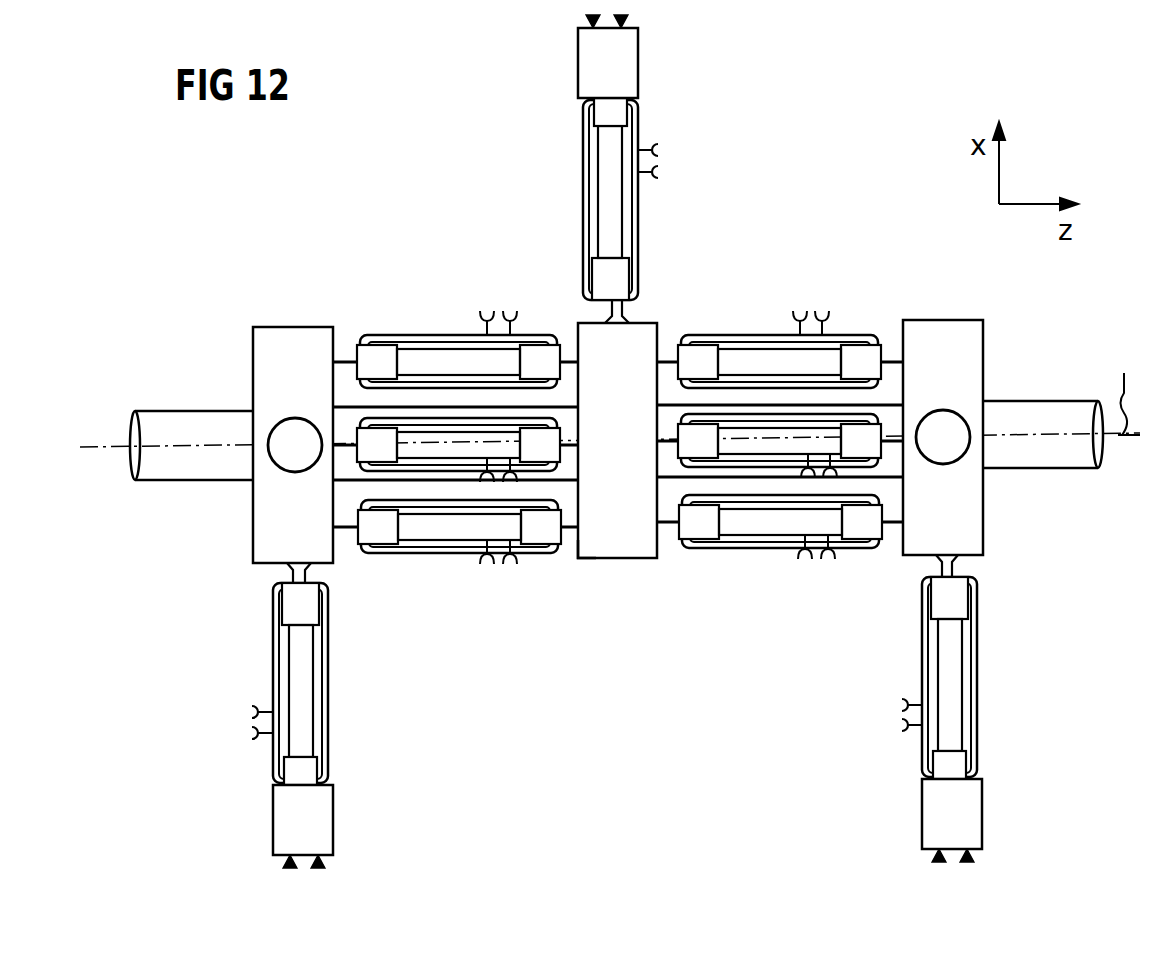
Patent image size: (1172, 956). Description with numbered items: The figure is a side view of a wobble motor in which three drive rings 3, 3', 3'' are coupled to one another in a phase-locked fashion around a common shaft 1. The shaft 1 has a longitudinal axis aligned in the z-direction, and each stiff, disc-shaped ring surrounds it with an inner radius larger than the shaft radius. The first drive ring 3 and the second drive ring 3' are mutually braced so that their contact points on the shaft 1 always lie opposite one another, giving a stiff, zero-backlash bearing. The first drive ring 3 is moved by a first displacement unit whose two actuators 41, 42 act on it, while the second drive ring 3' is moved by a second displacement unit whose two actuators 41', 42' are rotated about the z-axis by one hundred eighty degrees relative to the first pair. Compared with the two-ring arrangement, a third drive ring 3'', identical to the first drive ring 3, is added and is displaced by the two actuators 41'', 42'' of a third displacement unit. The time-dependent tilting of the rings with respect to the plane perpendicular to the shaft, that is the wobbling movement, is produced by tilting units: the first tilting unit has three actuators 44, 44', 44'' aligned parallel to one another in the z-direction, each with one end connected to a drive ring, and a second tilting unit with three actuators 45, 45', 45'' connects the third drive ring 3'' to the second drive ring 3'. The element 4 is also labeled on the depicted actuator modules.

The shaft 1 is at (1040, 457).
The drive ring 3 is at (979, 408).
The second drive ring 3' is at (599, 488).
The third drive ring 3'' is at (248, 416).
The actuator 4 is at (455, 583).
The actuator 41 is at (1022, 708).
The actuator 41' is at (544, 157).
The actuator 41'' is at (212, 715).
The actuator 42 is at (985, 384).
The actuator 42' is at (578, 608).
The actuator 42'' is at (242, 403).
The actuator 44 is at (780, 585).
The actuator 44' is at (768, 522).
The actuator 44'' is at (780, 297).
The actuator 45 is at (455, 583).
The actuator 45' is at (454, 519).
The actuator 45'' is at (455, 297).